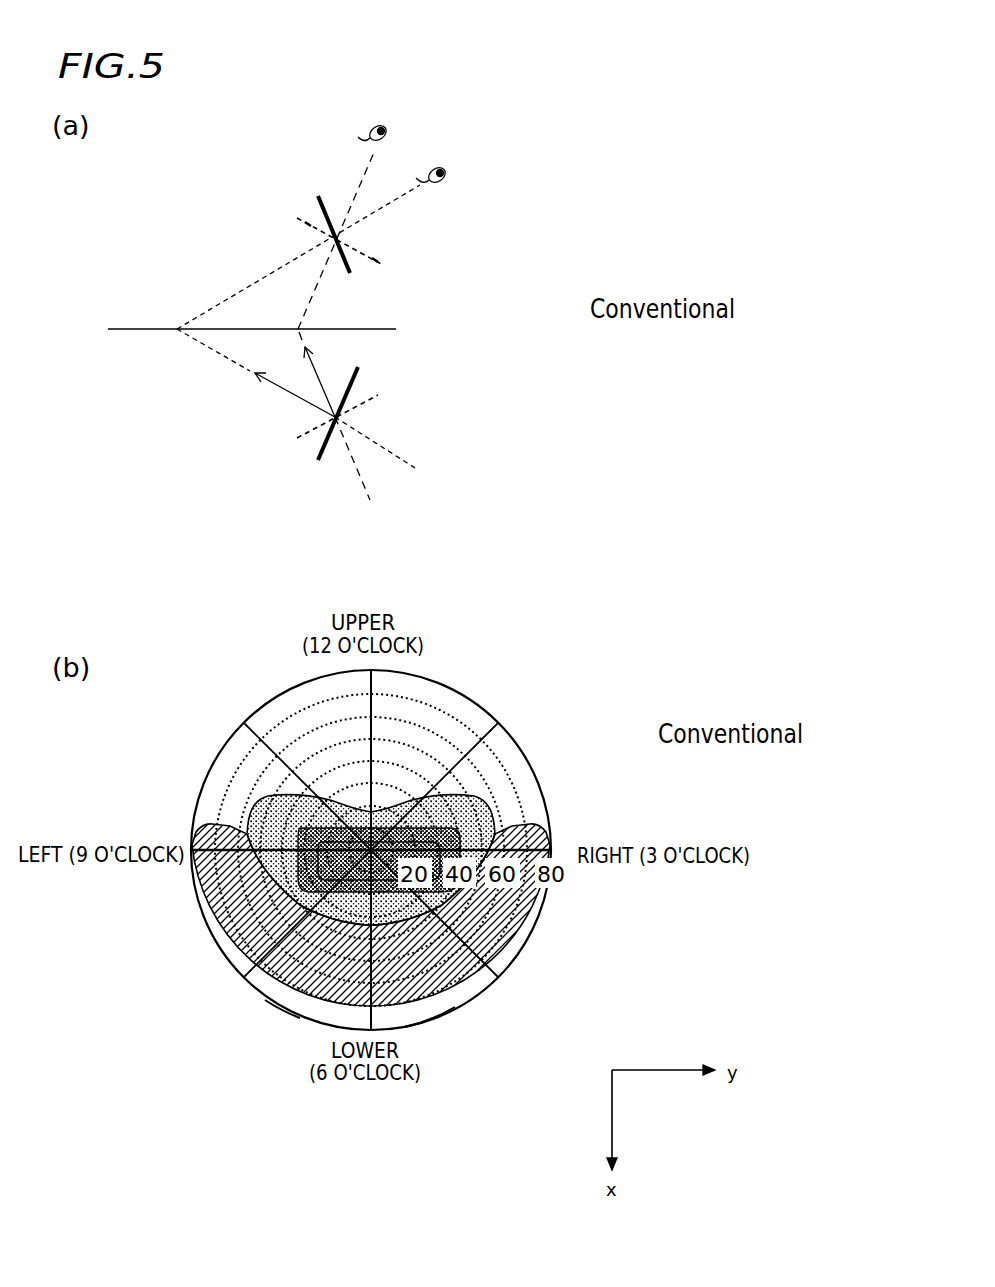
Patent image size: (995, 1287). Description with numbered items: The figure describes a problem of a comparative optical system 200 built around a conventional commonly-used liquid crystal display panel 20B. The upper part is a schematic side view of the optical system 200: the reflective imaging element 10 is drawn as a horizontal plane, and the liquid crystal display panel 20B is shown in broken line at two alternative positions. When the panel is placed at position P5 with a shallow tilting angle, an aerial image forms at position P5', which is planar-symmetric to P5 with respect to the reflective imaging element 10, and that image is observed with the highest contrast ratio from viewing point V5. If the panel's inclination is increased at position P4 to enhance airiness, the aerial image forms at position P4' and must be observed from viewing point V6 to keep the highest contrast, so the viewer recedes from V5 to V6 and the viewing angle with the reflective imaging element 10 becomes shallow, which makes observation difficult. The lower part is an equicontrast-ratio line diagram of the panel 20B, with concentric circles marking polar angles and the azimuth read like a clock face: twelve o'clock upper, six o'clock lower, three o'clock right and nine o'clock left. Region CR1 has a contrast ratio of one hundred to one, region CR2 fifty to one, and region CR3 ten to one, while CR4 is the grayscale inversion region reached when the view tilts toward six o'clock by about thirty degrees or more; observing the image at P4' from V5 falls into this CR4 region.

The optical system 200 is at (540, 138).
The reflective imaging element 10 is at (272, 330).
The liquid crystal display panel 20B is at (336, 449).
The viewing point V5 is at (384, 120).
The viewing point V6 is at (439, 169).
The position P4 is at (342, 404).
The position P4' is at (323, 220).
The position P5 is at (357, 413).
The position P5' is at (360, 251).
The region CR1 is at (372, 845).
The region CR2 is at (210, 942).
The region CR3 is at (277, 1002).
The grayscale inversion region CR4 is at (423, 993).